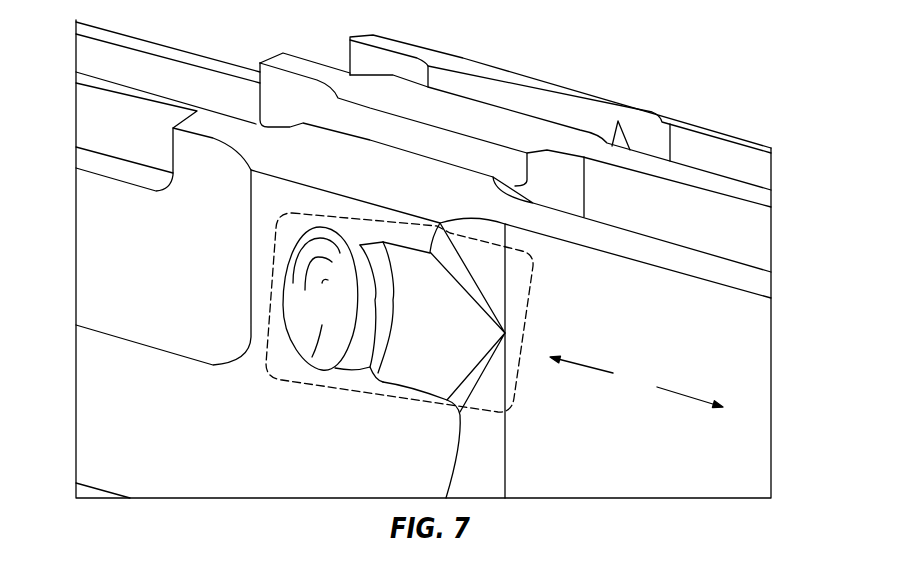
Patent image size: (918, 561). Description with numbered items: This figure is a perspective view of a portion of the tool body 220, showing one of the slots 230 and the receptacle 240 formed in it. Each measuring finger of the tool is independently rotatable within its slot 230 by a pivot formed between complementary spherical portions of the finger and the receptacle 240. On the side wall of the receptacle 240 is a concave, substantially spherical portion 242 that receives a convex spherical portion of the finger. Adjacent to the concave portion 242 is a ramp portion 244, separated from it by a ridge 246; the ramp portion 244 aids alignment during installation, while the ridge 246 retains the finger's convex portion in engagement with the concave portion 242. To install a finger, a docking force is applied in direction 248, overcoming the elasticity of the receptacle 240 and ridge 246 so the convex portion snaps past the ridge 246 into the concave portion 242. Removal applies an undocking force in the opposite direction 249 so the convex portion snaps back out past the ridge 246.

The tool body 220 is at (595, 78).
The slot 230 is at (682, 218).
The receptacle 240 is at (523, 333).
The substantially spherical portion 242 is at (313, 365).
The ramp portion 244 is at (467, 338).
The ridge 246 is at (368, 393).
The direction 248 is at (578, 365).
The direction 249 is at (691, 397).